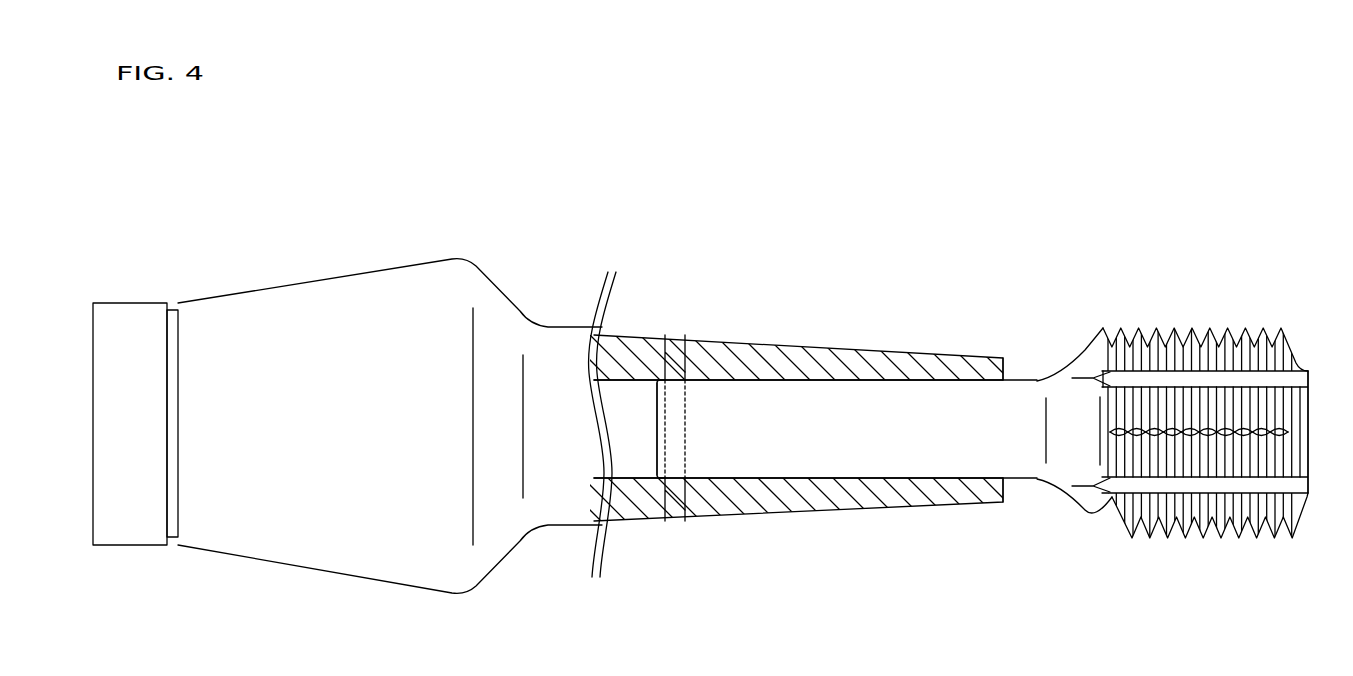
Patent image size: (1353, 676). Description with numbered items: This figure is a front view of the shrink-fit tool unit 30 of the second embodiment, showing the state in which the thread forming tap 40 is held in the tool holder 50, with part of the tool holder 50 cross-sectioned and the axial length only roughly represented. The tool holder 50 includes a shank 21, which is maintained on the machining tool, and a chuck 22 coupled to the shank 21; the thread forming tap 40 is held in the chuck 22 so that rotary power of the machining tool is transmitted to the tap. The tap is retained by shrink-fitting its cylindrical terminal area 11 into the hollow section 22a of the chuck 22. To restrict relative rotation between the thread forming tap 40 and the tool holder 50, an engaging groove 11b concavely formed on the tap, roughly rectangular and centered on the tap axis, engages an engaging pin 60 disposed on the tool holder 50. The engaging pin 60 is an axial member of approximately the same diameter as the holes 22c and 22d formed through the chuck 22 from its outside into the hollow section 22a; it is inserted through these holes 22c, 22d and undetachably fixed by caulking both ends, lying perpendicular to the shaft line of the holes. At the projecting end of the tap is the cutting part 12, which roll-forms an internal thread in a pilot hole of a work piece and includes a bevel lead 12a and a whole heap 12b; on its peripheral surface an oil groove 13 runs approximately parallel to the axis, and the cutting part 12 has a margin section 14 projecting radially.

The shrink-fit tool unit 30 is at (1076, 117).
The shank 21 is at (307, 296).
The tool holder 50 is at (642, 223).
The chuck 22 is at (823, 350).
The hollow section 22a is at (894, 478).
The hole 22c is at (684, 352).
The hole 22d is at (680, 493).
The engaging pin 60 is at (669, 345).
The cylindrical terminal area 11 is at (773, 460).
The engaging groove 11b is at (685, 430).
The thread forming tap 40 is at (1224, 274).
The oil groove 13 is at (1104, 386).
The cutting part 12 is at (1275, 612).
The bevel lead 12a is at (1280, 552).
The whole heap 12b is at (1075, 552).
The margin section 14 is at (1113, 432).